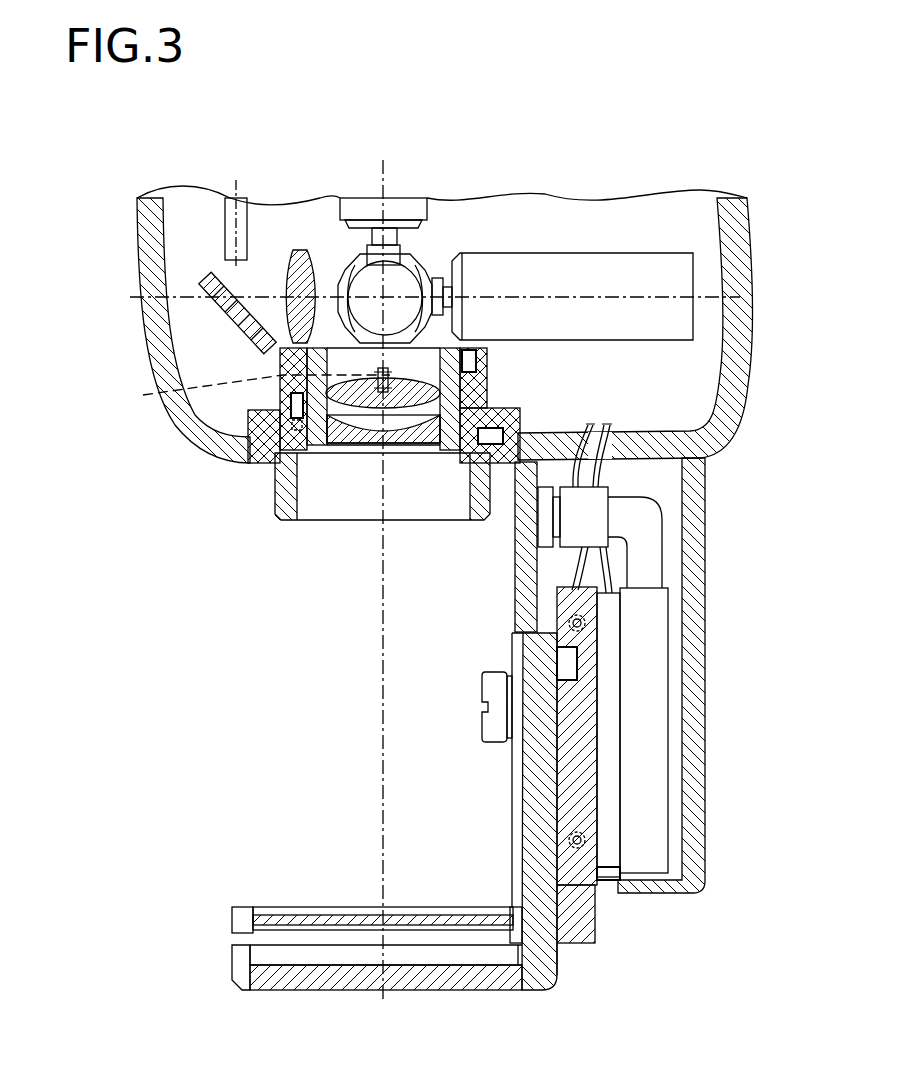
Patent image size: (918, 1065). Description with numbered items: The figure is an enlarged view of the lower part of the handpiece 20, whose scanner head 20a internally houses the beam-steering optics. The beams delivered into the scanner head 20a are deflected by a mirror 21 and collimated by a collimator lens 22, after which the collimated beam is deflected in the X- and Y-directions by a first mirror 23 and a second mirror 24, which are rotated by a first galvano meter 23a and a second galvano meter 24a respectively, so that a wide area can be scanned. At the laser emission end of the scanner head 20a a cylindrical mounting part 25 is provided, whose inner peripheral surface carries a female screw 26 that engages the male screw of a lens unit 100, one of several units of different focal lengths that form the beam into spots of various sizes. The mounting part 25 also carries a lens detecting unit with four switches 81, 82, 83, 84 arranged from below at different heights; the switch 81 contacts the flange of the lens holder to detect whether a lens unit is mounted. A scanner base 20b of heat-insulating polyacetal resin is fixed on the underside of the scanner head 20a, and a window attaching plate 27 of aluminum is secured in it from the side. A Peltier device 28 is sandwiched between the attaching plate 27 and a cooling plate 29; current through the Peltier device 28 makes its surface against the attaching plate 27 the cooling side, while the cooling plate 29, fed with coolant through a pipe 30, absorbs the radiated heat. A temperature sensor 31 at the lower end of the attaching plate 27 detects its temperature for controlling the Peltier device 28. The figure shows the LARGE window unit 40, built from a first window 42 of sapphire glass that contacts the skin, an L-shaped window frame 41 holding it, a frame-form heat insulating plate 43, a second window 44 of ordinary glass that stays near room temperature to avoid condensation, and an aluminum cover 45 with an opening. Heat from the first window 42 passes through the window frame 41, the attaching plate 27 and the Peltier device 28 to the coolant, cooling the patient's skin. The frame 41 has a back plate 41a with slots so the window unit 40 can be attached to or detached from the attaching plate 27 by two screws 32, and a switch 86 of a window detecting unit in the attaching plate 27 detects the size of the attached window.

The handpiece 20 is at (578, 110).
The scanner head 20a is at (752, 350).
The scanner base 20b is at (697, 665).
The mirror 21 is at (205, 300).
The collimator lens 22 is at (300, 252).
The first mirror 23 is at (355, 268).
The first galvano meter 23a is at (397, 214).
The second mirror 24 is at (432, 266).
The second galvano meter 24a is at (587, 265).
The mounting part 25 is at (282, 365).
The female screw 26 is at (235, 455).
The window attaching plate 27 is at (567, 795).
The Peltier device 28 is at (612, 868).
The cooling plate 29 is at (660, 775).
The pipe 30 is at (667, 540).
The temperature sensor 31 is at (592, 942).
The screws 32 is at (493, 690).
The LARGE window unit 40 is at (240, 1020).
The window frame 41 is at (530, 960).
The back plate 41a is at (560, 957).
The first window 42 is at (345, 976).
The heat insulating plate 43 is at (248, 940).
The second window 44 is at (248, 921).
The cover 45 is at (243, 907).
The switch 81 is at (503, 434).
The switch 82 is at (290, 405).
The switch 83 is at (247, 397).
The switch 84 is at (477, 360).
The switch 86 is at (558, 660).
The lens unit 100 is at (243, 537).